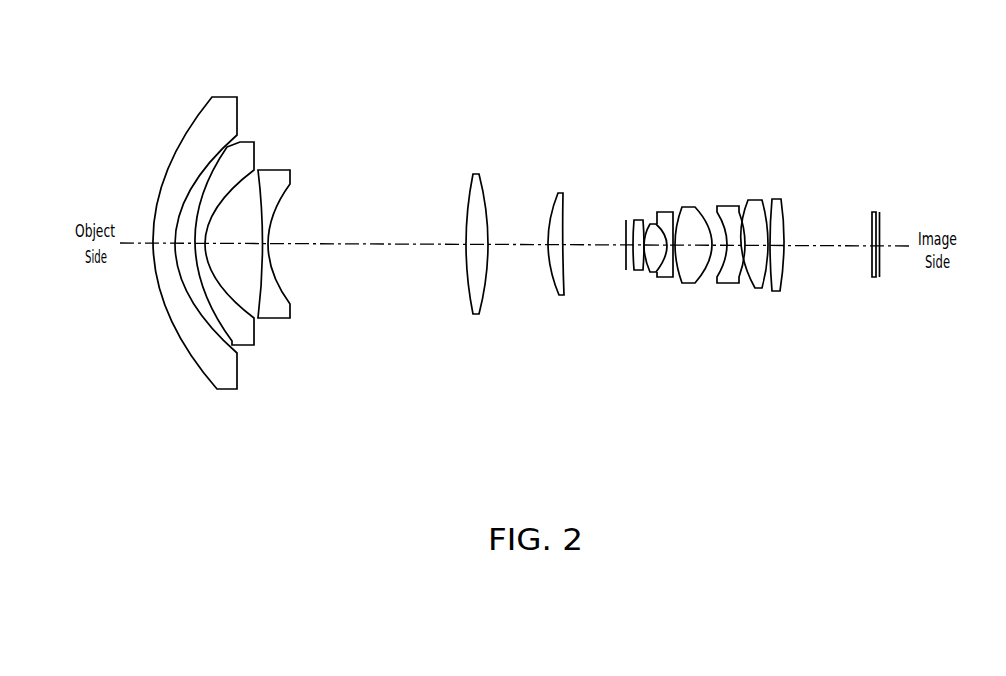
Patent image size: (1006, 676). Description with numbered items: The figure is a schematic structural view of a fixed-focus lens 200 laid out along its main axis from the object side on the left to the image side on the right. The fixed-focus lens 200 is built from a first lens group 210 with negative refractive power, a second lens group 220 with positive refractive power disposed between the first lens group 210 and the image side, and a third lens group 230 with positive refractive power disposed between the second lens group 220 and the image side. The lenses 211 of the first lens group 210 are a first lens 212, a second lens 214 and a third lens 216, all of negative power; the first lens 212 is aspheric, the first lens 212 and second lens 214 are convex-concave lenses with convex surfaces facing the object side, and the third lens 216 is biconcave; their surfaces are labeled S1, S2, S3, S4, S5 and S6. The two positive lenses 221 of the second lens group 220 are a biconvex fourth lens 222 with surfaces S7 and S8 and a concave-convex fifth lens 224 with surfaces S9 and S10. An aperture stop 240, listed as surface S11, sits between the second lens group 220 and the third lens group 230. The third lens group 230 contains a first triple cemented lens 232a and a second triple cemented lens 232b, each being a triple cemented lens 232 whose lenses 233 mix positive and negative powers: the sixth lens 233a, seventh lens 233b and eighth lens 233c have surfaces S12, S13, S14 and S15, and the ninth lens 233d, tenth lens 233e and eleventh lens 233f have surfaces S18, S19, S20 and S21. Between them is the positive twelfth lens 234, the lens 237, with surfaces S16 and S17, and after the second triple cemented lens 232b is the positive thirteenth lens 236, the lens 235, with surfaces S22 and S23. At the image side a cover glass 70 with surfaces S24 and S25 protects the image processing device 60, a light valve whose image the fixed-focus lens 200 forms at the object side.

The fixed-focus lens 200 is at (828, 460).
The first lens group 210 is at (246, 264).
The lenses of the first lens group 211 is at (246, 245).
The first lens 212 is at (198, 354).
The second lens 214 is at (245, 337).
The third lens 216 is at (273, 310).
The second lens group 220 is at (516, 269).
The lenses of the second lens group 221 is at (516, 252).
The fourth lens 222 is at (473, 303).
The fifth lens 224 is at (557, 287).
The third lens group 230 is at (779, 274).
The triple cemented lens 232 is at (754, 258).
The first triple cemented lens 232a is at (654, 267).
The second triple cemented lens 232b is at (829, 258).
The lenses of the triple cemented lens 233 is at (754, 258).
The sixth lens 233a is at (640, 274).
The seventh lens 233b is at (650, 273).
The eighth lens 233c is at (666, 278).
The ninth lens 233d is at (728, 283).
The tenth lens 233e is at (758, 288).
The eleventh lens 233f is at (778, 291).
The twelfth lens 234 is at (695, 283).
The lens having a positive refractive power 237 is at (731, 258).
The lens having a positive refractive power 235 is at (887, 315).
The thirteenth lens 236 is at (887, 315).
The aperture stop 240 is at (625, 252).
The cover glass 70 is at (872, 238).
The image processing device 60 is at (881, 238).
The surface S1 is at (193, 120).
The surface S2 is at (213, 143).
The surface S3 is at (230, 147).
The surface S4 is at (244, 170).
The surface S5 is at (261, 186).
The surface S6 is at (288, 202).
The surface S7 is at (468, 192).
The surface S8 is at (484, 190).
The surface S9 is at (553, 203).
The surface S10 is at (567, 195).
The surface S11 is at (623, 225).
The surface S12 is at (636, 219).
The surface S13 is at (648, 223).
The surface S14 is at (658, 217).
The surface S15 is at (679, 223).
The surface S16 is at (691, 209).
The surface S17 is at (700, 216).
The surface S18 is at (721, 216).
The surface S19 is at (732, 209).
The surface S20 is at (744, 206).
The surface S21 is at (762, 201).
The surface S22 is at (782, 200).
The surface S23 is at (787, 205).
The surface S24 is at (870, 218).
The surface S25 is at (880, 218).